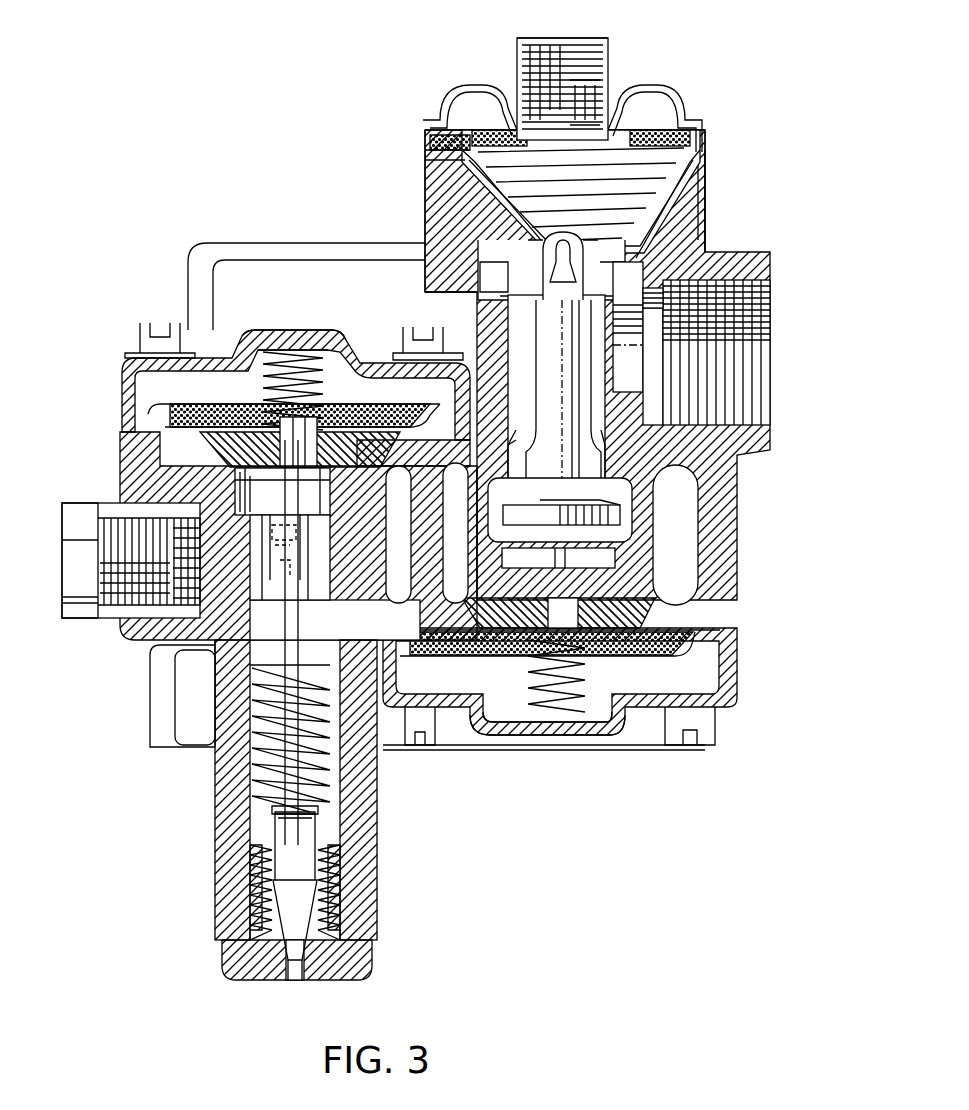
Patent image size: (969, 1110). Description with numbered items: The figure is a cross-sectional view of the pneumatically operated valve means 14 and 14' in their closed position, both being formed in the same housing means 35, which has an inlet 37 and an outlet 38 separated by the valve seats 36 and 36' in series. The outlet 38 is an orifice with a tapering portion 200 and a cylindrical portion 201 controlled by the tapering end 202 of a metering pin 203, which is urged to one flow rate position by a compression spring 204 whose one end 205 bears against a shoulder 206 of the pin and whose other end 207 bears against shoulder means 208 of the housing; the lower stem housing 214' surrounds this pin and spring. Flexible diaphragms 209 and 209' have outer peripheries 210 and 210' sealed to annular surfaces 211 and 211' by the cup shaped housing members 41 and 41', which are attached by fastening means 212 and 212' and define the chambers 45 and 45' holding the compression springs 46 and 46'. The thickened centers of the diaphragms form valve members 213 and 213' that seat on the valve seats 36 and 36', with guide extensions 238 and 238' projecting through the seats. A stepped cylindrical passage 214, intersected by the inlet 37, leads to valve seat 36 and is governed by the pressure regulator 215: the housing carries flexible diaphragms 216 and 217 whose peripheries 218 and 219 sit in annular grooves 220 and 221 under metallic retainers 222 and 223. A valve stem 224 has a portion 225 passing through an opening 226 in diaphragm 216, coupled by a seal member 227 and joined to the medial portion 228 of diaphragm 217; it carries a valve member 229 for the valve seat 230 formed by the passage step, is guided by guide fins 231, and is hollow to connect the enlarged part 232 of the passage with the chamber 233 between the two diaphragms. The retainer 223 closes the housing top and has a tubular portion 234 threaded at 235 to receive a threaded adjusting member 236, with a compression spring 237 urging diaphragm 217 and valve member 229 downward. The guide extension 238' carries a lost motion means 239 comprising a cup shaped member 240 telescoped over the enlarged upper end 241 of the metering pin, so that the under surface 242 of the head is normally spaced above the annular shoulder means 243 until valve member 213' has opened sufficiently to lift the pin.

The pneumatically operated valve means 14 is at (544, 780).
The pneumatically operated valve means 14' is at (306, 265).
The housing means 35 is at (424, 232).
The valve seat 36 is at (465, 535).
The valve seat 36' is at (420, 533).
The inlet 37 is at (750, 300).
The outlet 38 is at (300, 962).
The cup shaped housing member 41 is at (576, 750).
The cup shaped housing member 41' is at (294, 313).
The chamber 45 is at (627, 704).
The chamber 45' is at (330, 338).
The compression spring 46 is at (594, 690).
The compression spring 46' is at (277, 391).
The tapering portion 200 is at (345, 912).
The cylindrical portion 201 is at (372, 958).
The tapering end 202 is at (335, 893).
The metering pin 203 is at (320, 818).
The compression spring 204 is at (335, 762).
The end of compression spring 205 is at (270, 810).
The shoulder 206 is at (275, 820).
The other end of compression spring 207 is at (215, 672).
The shoulder means 208 is at (210, 655).
The flexible diaphragm 209 is at (593, 661).
The flexible diaphragm 209' is at (269, 385).
The outer periphery 210 is at (604, 649).
The outer periphery 210' is at (242, 426).
The annular surface 211 is at (610, 631).
The annular surface 211' is at (245, 440).
The fastening means 212 is at (590, 729).
The fastening means 212' is at (139, 335).
The valve member 213 is at (587, 598).
The valve member 213' is at (343, 442).
The stepped cylindrical passage 214 is at (638, 343).
The stem housing 214' is at (266, 790).
The pressure regulator 215 is at (698, 48).
The flexible diaphragm 216 is at (628, 280).
The flexible diaphragm 217 is at (452, 126).
The outer periphery 218 is at (670, 236).
The outer periphery 219 is at (430, 134).
The annular groove 220 is at (670, 262).
The annular groove 221 is at (425, 158).
The metallic retainer 222 is at (676, 212).
The metallic retainer 223 is at (660, 102).
The valve stem 224 is at (520, 370).
The portion of valve stem 225 is at (540, 278).
The opening 226 is at (543, 320).
The seal member 227 is at (440, 292).
The medial portion 228 is at (538, 238).
The valve member 229 is at (620, 505).
The valve seat 230 is at (680, 535).
The guide fins 231 is at (608, 460).
The enlarged part 232 is at (626, 528).
The chamber 233 is at (680, 182).
The tubular portion 234 is at (608, 52).
The internal threads 235 is at (547, 45).
The threaded adjusting member 236 is at (522, 72).
The compression spring 237 is at (530, 194).
The guide extension 238 is at (604, 559).
The guide extension 238' is at (243, 490).
The lost motion means 239 is at (258, 598).
The cup shaped member 240 is at (330, 600).
The enlarged upper end 241 is at (292, 580).
The under surface 242 is at (262, 568).
The annular shoulder means 243 is at (262, 590).